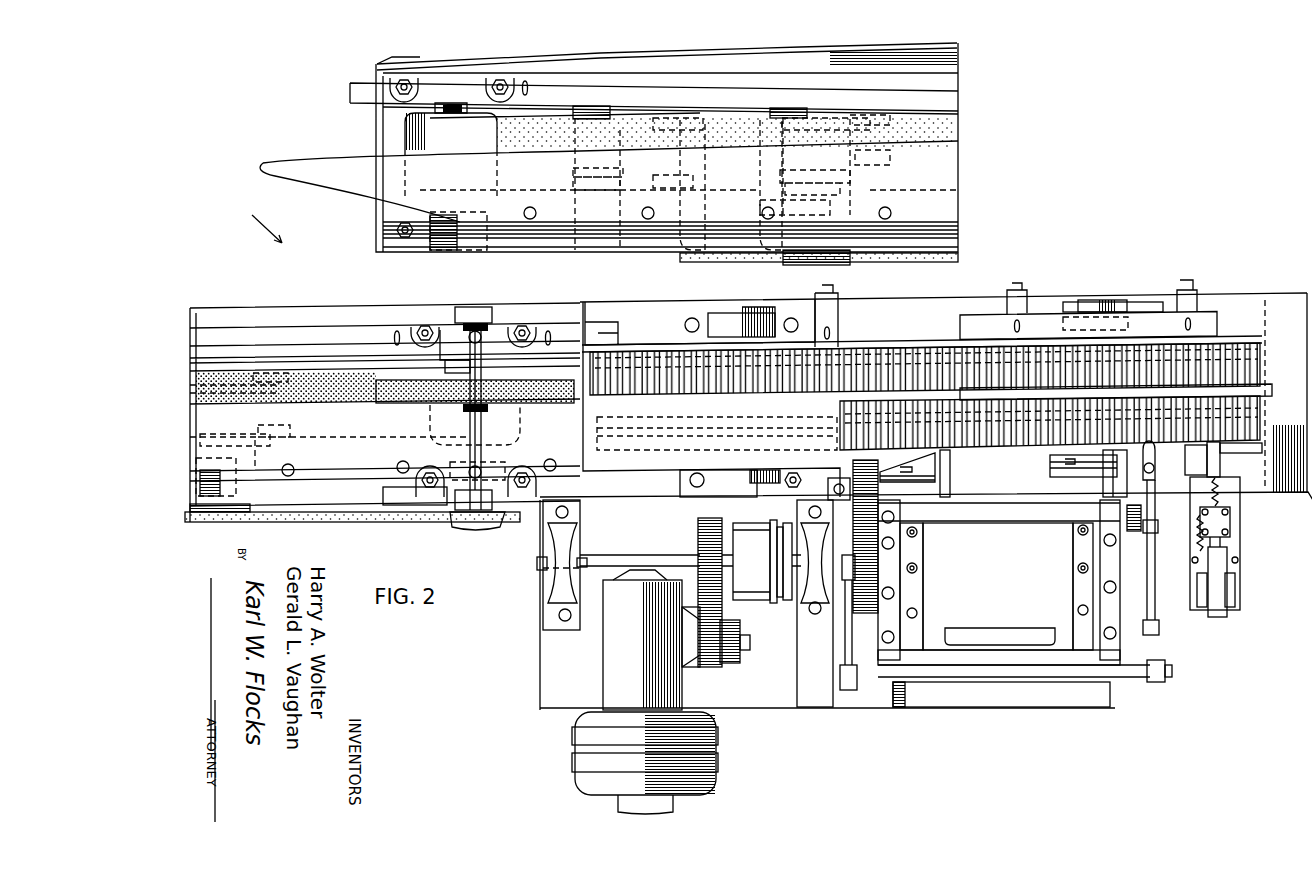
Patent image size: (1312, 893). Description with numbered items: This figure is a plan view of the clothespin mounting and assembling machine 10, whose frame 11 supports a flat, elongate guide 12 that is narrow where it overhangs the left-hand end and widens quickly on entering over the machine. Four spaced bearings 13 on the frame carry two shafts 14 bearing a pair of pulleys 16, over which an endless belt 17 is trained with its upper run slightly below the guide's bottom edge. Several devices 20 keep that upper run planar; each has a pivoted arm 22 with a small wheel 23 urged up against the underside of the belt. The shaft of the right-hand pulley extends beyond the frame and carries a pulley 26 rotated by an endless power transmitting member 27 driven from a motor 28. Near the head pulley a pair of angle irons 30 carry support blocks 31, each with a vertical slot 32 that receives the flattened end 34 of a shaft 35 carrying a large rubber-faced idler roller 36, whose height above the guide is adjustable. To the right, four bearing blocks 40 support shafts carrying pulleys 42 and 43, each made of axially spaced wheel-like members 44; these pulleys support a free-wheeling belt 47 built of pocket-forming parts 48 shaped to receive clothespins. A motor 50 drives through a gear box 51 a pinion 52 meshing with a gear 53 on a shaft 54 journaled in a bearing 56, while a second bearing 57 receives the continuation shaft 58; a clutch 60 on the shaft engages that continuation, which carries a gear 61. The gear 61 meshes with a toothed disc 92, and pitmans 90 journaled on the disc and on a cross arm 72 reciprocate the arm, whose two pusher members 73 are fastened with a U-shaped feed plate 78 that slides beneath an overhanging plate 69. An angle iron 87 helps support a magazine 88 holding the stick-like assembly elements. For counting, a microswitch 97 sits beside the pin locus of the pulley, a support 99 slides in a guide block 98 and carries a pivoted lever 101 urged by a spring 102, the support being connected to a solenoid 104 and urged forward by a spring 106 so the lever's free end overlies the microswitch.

The clothespin mounting and assembling machine 10 is at (258, 221).
The frame 11 is at (602, 62).
The guide 12 is at (330, 160).
The bearings 13 is at (410, 60).
The shafts 14 is at (460, 103).
The pulleys 16 is at (440, 105).
The endless belt 17 is at (540, 118).
The devices 20 is at (870, 145).
The arm 22 is at (640, 140).
The small wheel 23 is at (860, 115).
The pulley 26 is at (445, 517).
The endless power transmitting member 27 is at (930, 260).
The motor 28 is at (683, 250).
The angle irons 30 is at (400, 312).
The support blocks 31 is at (492, 315).
The slot 32 is at (478, 310).
The flattened end 34 is at (470, 308).
The shaft 35 is at (490, 438).
The rubber-faced idler roller 36 is at (550, 398).
The bearing blocks 40 is at (718, 322).
The pulley 42 is at (855, 343).
The pulley 43 is at (1020, 425).
The wheel-like members 44 is at (1032, 350).
The belt 47 is at (940, 355).
The pocket-forming parts 48 is at (905, 348).
The motor 50 is at (700, 768).
The gear box 51 is at (651, 640).
The pinion 52 is at (713, 665).
The gear 53 is at (700, 530).
The shaft 54 is at (630, 555).
The bearing 56 is at (548, 590).
The bearing 57 is at (815, 512).
The continuation shaft 58 is at (790, 590).
The clutch 60 is at (755, 561).
The gear 61 is at (880, 585).
The plate 69 is at (992, 635).
The cross arm 72 is at (1020, 680).
The pusher members 73 is at (912, 615).
The feed plate 78 is at (999, 569).
The angle iron 87 is at (925, 462).
The magazine 88 is at (943, 499).
The pitmans 90 is at (847, 603).
The disc 92 is at (913, 550).
The microswitch 97 is at (1232, 445).
The guide block 98 is at (1230, 522).
The support 99 is at (1220, 545).
The lever 101 is at (1212, 460).
The spring 102 is at (1232, 503).
The solenoid 104 is at (1220, 585).
The spring 106 is at (1200, 543).